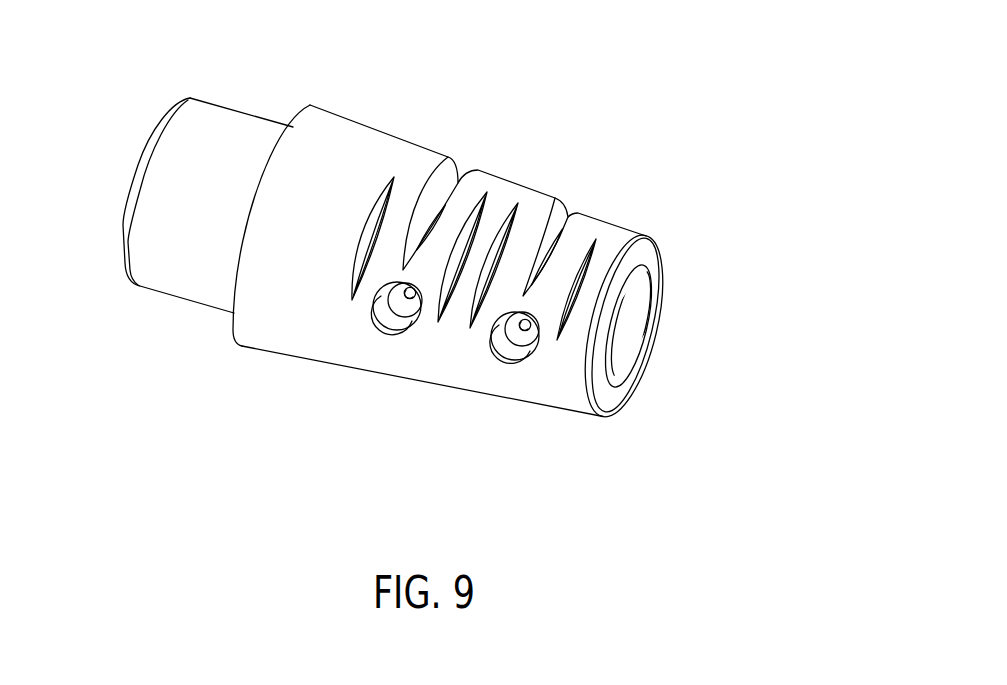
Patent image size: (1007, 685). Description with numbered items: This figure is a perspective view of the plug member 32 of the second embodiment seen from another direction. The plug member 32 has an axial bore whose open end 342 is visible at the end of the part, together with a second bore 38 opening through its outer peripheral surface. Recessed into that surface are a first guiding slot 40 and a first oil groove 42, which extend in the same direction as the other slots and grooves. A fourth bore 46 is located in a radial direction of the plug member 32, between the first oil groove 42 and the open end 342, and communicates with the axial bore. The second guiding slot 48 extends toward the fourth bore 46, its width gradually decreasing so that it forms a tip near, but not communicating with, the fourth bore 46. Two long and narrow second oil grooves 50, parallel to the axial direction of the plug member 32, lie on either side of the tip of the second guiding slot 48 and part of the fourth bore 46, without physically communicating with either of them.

The plug member 32 is at (717, 143).
The open end 342 is at (637, 349).
The second bore 38 is at (392, 321).
The first guiding slot 40 is at (427, 198).
The first oil groove 42 is at (364, 205).
The fourth bore 46 is at (501, 350).
The second guiding slot 48 is at (571, 205).
The second oil groove 50 is at (518, 196).